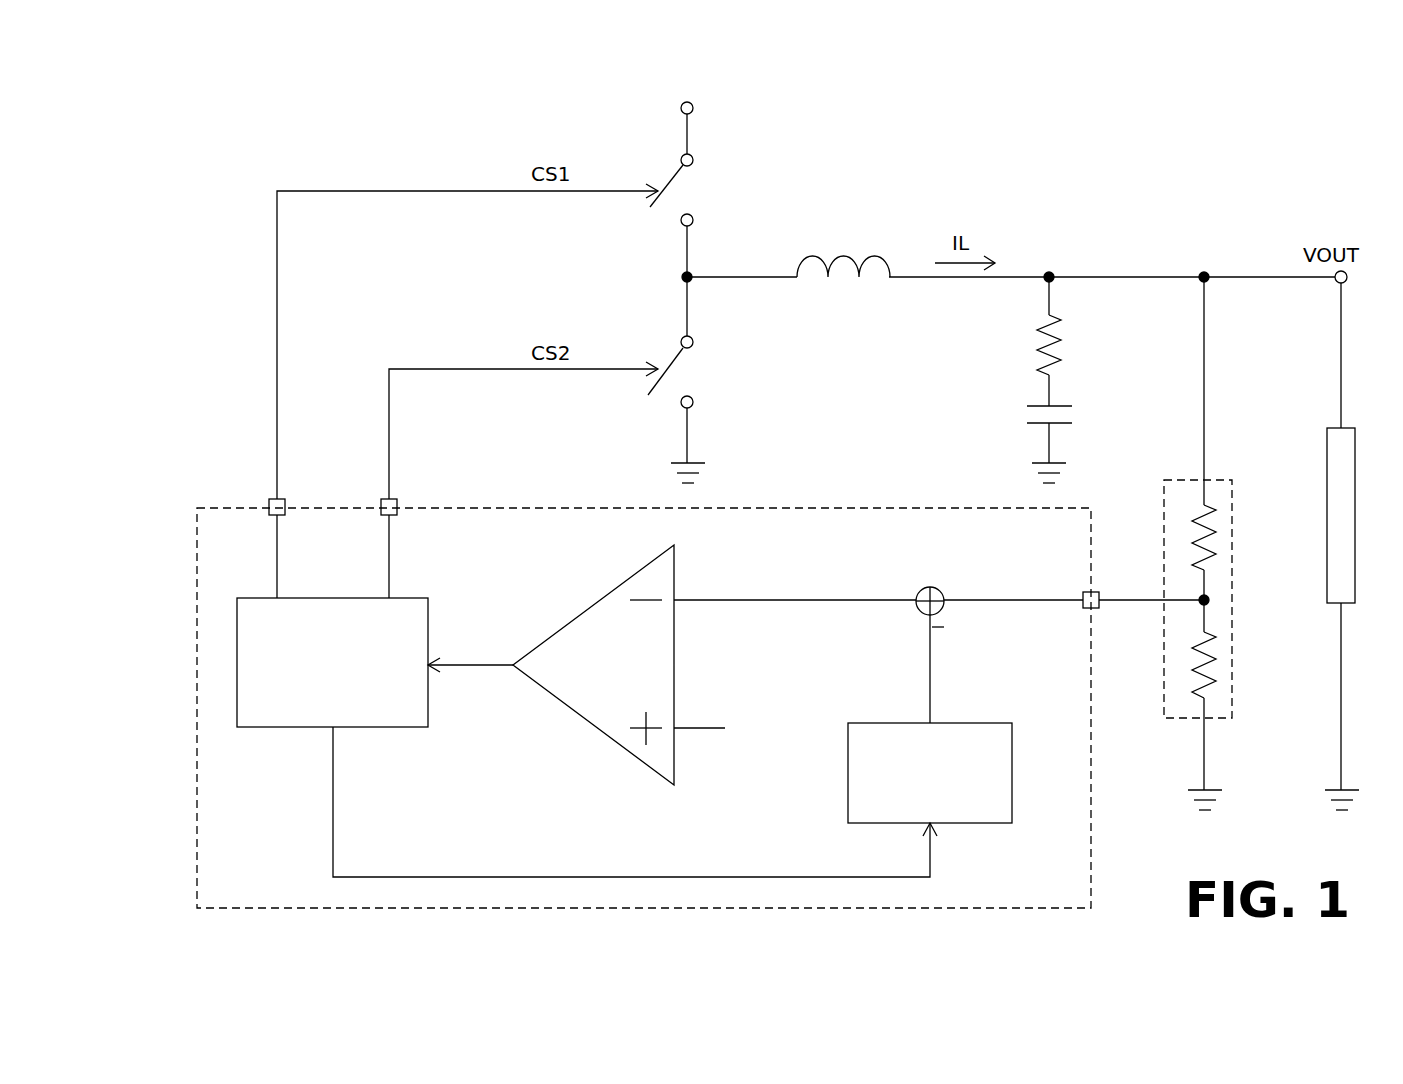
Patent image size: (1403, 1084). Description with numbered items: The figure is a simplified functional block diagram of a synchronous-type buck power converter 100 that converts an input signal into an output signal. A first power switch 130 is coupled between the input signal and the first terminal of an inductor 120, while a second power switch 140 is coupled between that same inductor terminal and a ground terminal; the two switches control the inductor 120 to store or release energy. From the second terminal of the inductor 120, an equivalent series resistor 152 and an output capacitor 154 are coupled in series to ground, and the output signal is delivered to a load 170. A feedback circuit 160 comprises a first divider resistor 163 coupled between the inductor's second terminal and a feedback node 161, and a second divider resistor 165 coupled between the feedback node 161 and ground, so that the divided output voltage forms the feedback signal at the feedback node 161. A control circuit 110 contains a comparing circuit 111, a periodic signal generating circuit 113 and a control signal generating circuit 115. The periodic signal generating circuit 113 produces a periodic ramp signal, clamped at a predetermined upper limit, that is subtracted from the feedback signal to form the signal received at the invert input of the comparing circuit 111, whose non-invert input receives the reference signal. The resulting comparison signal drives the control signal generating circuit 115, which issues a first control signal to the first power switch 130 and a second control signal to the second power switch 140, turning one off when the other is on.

The power converter 100 is at (1230, 115).
The control circuit 110 is at (197, 710).
The comparing circuit 111 is at (593, 725).
The periodic signal generating circuit 113 is at (1012, 772).
The control signal generating circuit 115 is at (312, 728).
The inductor 120 is at (843, 256).
The first power switch 130 is at (696, 195).
The second power switch 140 is at (688, 370).
The equivalent series resistor 152 is at (1033, 343).
The output capacitor 154 is at (1030, 418).
The feedback circuit 160 is at (1199, 543).
The feedback node 161 is at (1210, 603).
The first divider resistor 163 is at (1188, 538).
The second divider resistor 165 is at (1190, 668).
The load 170 is at (1326, 518).